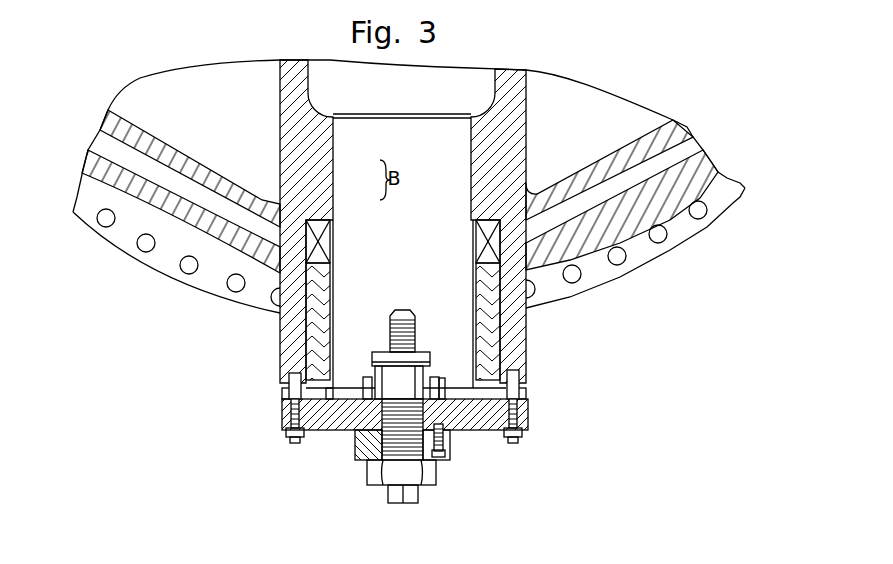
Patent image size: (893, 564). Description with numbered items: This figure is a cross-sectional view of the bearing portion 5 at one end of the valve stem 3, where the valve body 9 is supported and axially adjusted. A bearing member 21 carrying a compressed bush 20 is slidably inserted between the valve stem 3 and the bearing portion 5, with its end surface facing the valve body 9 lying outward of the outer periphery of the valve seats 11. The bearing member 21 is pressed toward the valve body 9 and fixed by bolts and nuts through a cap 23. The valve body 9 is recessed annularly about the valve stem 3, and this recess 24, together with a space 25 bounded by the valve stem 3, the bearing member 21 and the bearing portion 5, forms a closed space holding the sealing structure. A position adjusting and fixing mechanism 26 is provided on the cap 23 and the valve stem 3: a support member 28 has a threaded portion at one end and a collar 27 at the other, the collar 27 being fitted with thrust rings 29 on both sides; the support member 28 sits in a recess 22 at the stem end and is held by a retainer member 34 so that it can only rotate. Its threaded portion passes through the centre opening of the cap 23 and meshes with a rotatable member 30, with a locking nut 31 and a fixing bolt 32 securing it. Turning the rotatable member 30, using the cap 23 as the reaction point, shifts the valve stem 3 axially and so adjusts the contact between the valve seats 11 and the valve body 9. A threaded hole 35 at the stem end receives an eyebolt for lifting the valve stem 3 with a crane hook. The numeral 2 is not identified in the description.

The rotor blade tip 2 is at (703, 173).
The valve stem 3 is at (333, 138).
The bearing portion 5 is at (527, 360).
The valve body 9 is at (150, 87).
The valve seats 11 is at (685, 222).
The compressed bush 20 is at (327, 318).
The bearing member 21 is at (313, 343).
The recess 22 is at (433, 401).
The cap 23 is at (285, 419).
The recess 24 is at (330, 224).
The space 25 is at (332, 240).
The position adjusting and fixing mechanism 26 is at (340, 479).
The collar 27 is at (393, 366).
The support member 28 is at (352, 436).
The thrust rings 29 is at (423, 352).
The rotatable member 30 is at (363, 458).
The locking nut 31 is at (433, 476).
The fixing bolt 32 is at (447, 452).
The retainer member 34 is at (386, 382).
The threaded hole 35 is at (390, 312).